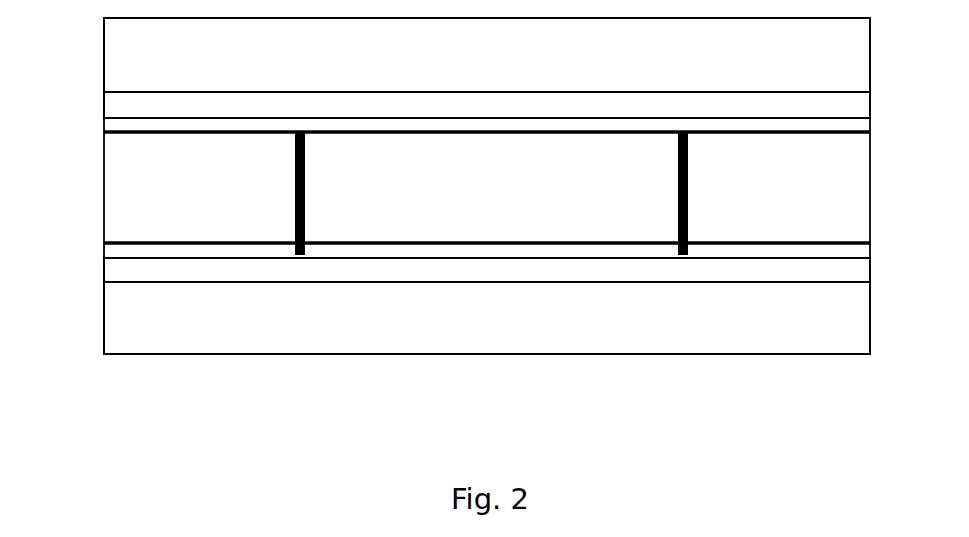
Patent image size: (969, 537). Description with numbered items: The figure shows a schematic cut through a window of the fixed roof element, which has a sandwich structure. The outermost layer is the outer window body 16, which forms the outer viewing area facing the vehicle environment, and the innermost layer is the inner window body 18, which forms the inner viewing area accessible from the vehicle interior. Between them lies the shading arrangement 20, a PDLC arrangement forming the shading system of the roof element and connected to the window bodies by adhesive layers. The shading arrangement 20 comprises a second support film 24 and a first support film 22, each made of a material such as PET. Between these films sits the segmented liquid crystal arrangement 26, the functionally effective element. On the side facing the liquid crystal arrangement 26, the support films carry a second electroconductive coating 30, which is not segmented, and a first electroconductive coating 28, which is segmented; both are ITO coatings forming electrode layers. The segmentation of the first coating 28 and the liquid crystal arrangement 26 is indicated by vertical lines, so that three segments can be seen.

The shading arrangement 20 is at (72, 97).
The outer window body 16 is at (488, 67).
The inner window body 18 is at (488, 330).
The second support film 24 is at (843, 105).
The first support film 22 is at (853, 268).
The second electroconductive coating 30 is at (127, 125).
The first electroconductive coating 28 is at (128, 250).
The liquid crystal arrangement 26 is at (488, 204).